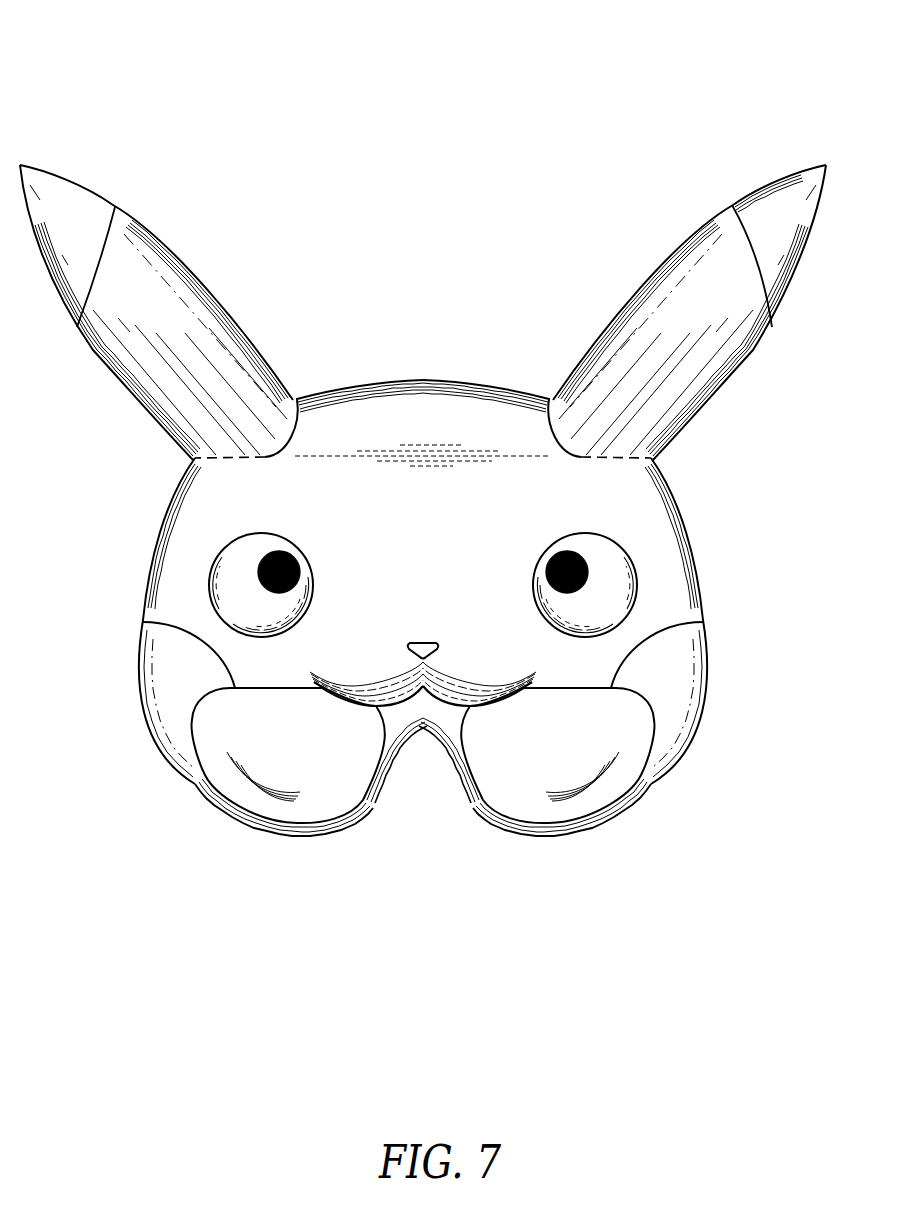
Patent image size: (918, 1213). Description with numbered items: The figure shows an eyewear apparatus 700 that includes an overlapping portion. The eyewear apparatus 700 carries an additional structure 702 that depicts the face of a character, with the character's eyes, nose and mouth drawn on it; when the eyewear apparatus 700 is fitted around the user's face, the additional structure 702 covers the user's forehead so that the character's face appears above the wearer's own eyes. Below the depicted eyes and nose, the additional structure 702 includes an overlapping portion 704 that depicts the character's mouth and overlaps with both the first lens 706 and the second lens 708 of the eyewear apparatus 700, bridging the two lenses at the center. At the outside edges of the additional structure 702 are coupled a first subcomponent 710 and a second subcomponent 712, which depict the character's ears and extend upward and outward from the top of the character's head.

The eyewear apparatus 700 is at (103, 44).
The additional structure 702 is at (401, 507).
The overlapping portion 704 is at (407, 693).
The first lens 706 is at (268, 746).
The second lens 708 is at (529, 746).
The first subcomponent 710 is at (122, 301).
The second subcomponent 712 is at (678, 301).